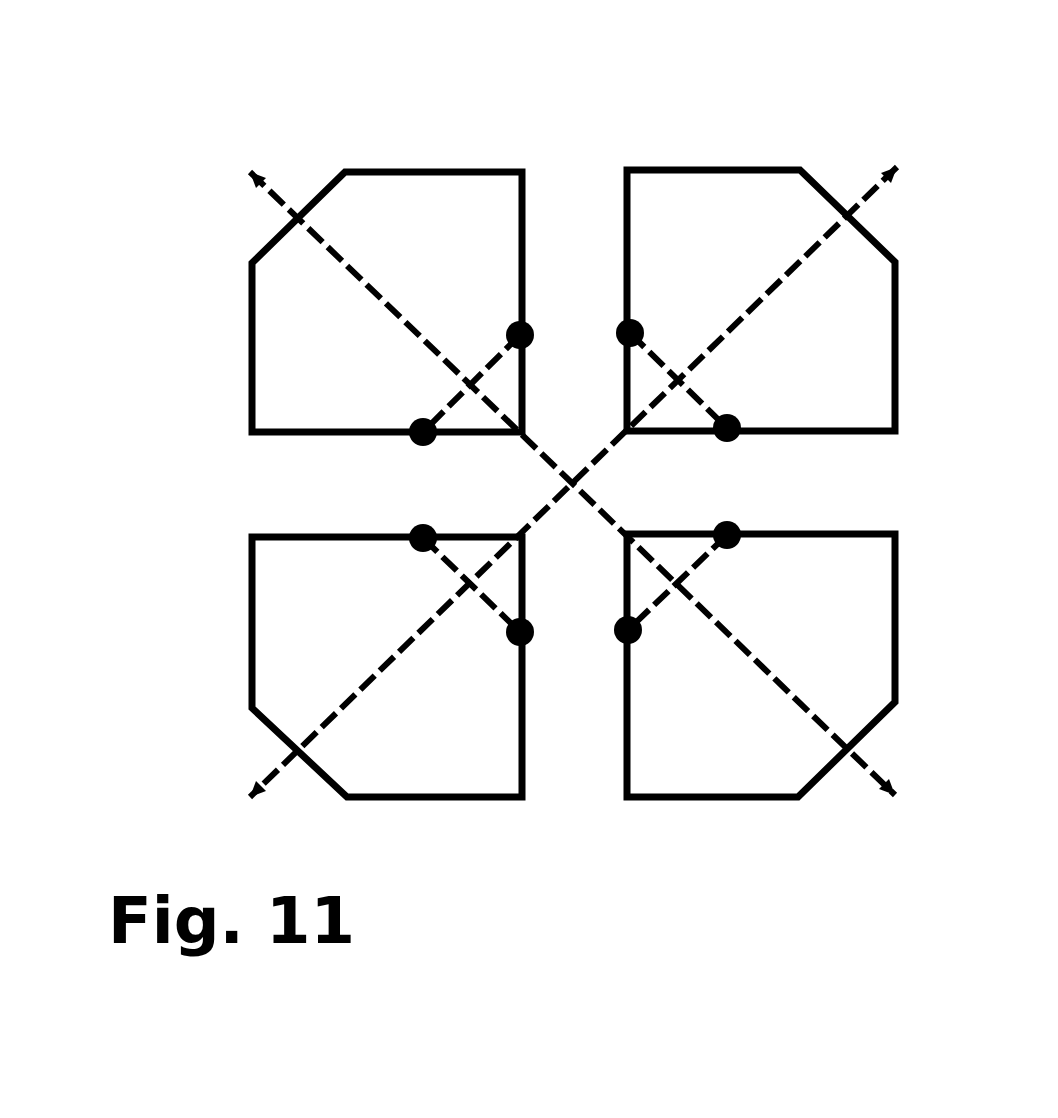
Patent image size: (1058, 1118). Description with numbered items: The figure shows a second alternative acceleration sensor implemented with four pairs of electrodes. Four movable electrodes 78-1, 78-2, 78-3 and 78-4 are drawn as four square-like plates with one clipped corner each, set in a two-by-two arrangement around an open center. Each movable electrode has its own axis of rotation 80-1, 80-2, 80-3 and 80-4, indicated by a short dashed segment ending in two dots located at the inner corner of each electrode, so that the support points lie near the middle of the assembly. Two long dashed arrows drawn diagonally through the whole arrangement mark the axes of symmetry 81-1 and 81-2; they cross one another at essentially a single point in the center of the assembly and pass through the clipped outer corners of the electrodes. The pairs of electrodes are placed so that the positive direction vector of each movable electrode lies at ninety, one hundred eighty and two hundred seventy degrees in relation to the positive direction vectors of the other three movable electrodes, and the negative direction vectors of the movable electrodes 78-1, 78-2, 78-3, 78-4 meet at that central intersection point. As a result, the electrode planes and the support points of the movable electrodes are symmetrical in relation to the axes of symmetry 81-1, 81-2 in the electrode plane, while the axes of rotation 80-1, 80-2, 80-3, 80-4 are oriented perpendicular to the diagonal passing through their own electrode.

The movable electrode 78-1 is at (430, 172).
The movable electrode 78-2 is at (745, 170).
The movable electrode 78-3 is at (402, 800).
The movable electrode 78-4 is at (728, 800).
The axis of rotation 80-1 is at (490, 360).
The axis of rotation 80-2 is at (667, 363).
The axis of rotation 80-3 is at (485, 597).
The axis of rotation 80-4 is at (663, 597).
The axis of symmetry 81-1 is at (283, 200).
The axis of symmetry 81-2 is at (858, 200).